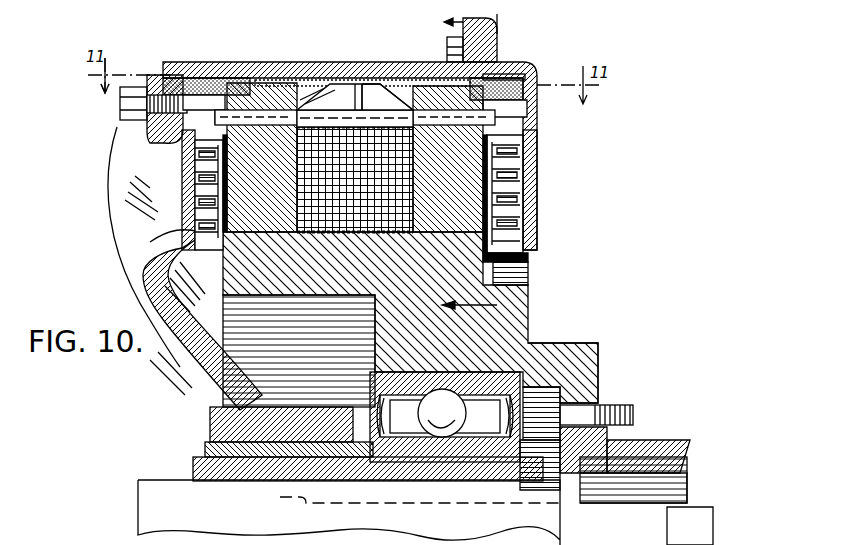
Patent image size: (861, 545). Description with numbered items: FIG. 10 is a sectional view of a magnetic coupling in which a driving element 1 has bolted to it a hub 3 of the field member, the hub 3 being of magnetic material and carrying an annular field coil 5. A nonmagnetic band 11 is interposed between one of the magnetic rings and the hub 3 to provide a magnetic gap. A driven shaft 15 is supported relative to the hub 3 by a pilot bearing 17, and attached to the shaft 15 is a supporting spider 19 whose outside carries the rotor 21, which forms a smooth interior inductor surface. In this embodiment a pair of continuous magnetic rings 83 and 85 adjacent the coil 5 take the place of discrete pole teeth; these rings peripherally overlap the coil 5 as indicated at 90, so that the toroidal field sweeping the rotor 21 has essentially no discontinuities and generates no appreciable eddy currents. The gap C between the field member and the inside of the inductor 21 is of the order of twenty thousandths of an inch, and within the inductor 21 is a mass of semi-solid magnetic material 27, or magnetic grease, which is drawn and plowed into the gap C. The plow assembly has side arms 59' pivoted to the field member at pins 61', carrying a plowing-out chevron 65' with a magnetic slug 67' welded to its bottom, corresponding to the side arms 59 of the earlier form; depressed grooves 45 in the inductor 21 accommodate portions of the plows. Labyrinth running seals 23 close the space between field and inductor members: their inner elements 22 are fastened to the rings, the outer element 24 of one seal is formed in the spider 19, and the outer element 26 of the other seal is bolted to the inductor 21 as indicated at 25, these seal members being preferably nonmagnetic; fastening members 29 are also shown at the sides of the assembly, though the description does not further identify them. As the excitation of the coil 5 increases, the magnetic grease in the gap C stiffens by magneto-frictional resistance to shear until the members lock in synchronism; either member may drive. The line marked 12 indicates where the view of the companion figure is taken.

The driving element 1 is at (660, 445).
The hub 3 is at (518, 332).
The annular field coil 5 is at (352, 232).
The nonmagnetic band 11 is at (258, 232).
The section line 12- 12 is at (485, 165).
The driven shaft 15 is at (246, 516).
The pilot bearing 17 is at (450, 416).
The supporting spider 19 is at (205, 372).
The rotor 21 is at (278, 62).
The inner seal elements 22 is at (253, 206).
The labyrinth running seals 23 is at (186, 190).
The outer seal element 24 is at (183, 165).
The bolt 25 is at (497, 66).
The outer seal element 26 is at (537, 173).
The semi-solid magnetic material 27 is at (238, 75).
The mounting bolt 29 is at (165, 140).
The depressed grooves 45 is at (206, 70).
The side arms 59 is at (505, 107).
The side arms 59' is at (204, 100).
The pivot pins 61' is at (379, 132).
The plowing-out chevron 65' is at (355, 75).
The magnetic slug 67' is at (355, 84).
The continuous magnetic ring 83 is at (262, 157).
The continuous magnetic ring 85 is at (456, 196).
The peripheral overlap 90 is at (312, 78).
The gap C is at (429, 98).